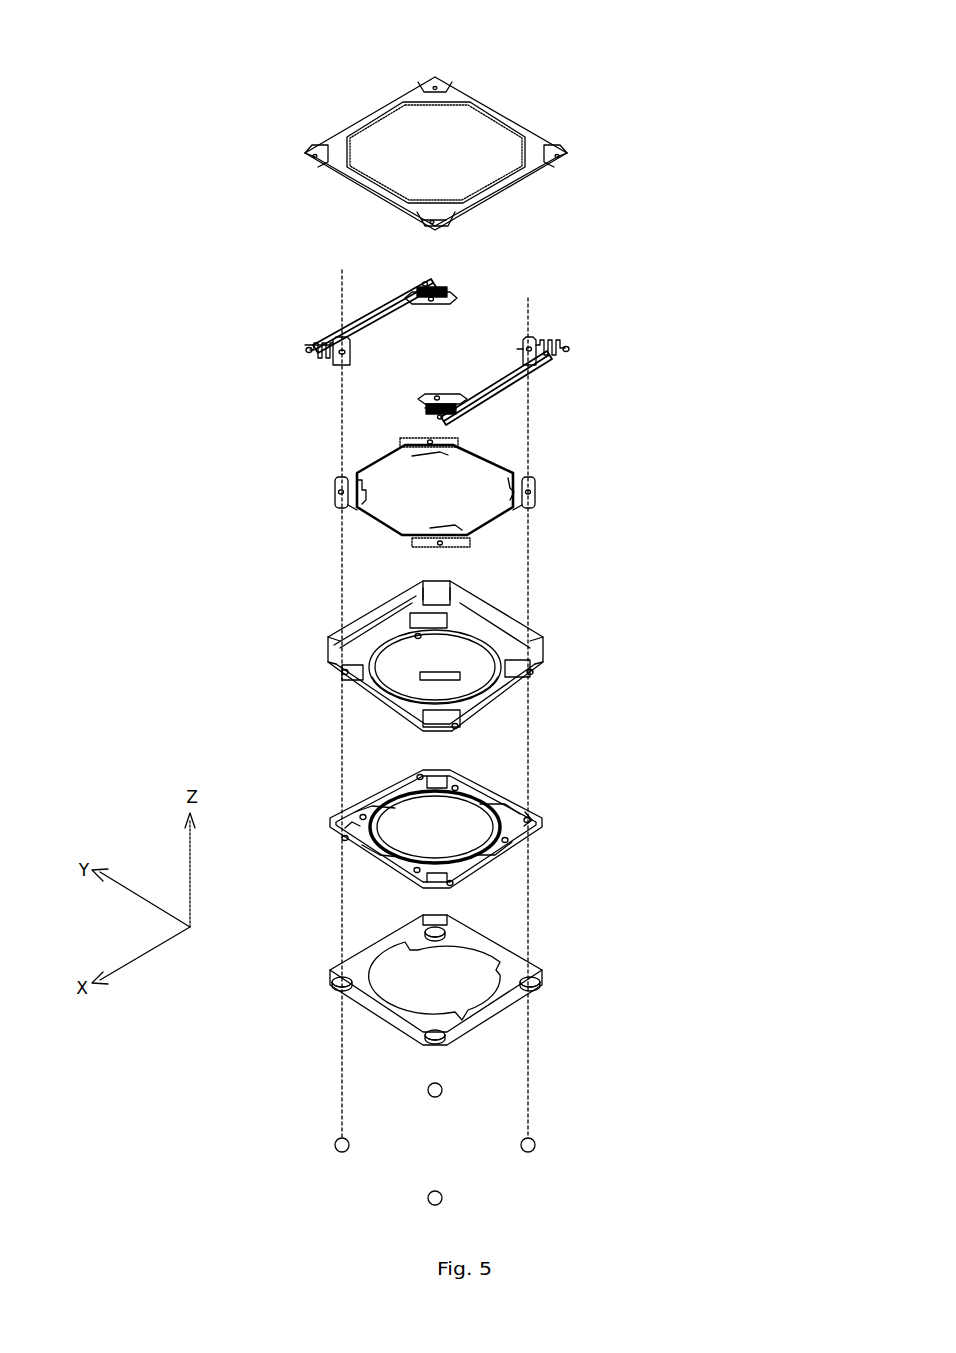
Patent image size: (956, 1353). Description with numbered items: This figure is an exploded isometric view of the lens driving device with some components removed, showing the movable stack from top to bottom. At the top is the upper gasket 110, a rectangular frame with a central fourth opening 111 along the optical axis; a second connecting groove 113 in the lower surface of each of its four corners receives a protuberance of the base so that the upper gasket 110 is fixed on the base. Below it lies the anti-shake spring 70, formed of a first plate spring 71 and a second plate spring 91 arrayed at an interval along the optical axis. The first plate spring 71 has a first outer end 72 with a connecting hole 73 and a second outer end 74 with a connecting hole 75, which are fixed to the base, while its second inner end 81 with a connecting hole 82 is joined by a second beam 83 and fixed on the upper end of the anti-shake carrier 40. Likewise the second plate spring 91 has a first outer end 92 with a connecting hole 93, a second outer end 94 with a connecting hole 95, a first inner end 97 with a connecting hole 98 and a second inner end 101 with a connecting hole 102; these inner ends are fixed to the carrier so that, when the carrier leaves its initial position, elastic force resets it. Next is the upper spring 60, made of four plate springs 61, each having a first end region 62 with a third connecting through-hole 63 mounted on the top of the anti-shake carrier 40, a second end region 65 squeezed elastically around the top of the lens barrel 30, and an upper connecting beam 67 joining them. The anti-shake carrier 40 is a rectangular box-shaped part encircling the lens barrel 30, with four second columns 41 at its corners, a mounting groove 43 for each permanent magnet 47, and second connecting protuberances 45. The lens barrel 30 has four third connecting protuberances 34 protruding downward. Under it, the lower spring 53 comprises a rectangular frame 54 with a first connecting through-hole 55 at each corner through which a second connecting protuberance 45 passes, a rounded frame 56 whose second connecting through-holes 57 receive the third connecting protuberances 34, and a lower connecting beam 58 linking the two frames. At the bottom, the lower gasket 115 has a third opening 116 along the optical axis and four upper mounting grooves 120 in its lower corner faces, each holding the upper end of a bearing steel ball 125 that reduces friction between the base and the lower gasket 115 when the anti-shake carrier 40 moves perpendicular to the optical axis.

The upper gasket 110 is at (518, 106).
The fourth opening 111 is at (381, 140).
The second connecting groove 113 is at (440, 86).
The anti-shake spring 70 is at (545, 270).
The first plate spring 71 is at (370, 305).
The first outer end 72 is at (432, 290).
The connecting hole 73 is at (423, 282).
The second outer end 74 is at (320, 360).
The connecting hole 75 is at (306, 350).
The second inner end 81 is at (333, 345).
The connecting hole 82 is at (436, 295).
The second beam 83 is at (340, 345).
The second plate spring 91 is at (492, 380).
The first outer end 92 is at (553, 345).
The connecting hole 93 is at (569, 349).
The second outer end 94 is at (437, 420).
The connecting hole 95 is at (420, 406).
The first inner end 97 is at (529, 335).
The connecting hole 98 is at (523, 348).
The second inner end 101 is at (434, 397).
The connecting hole 102 is at (440, 403).
The upper spring 60 is at (600, 430).
The plate spring 61 is at (372, 455).
The first end region 62 is at (338, 478).
The third connecting through-hole 63 is at (338, 492).
The second end region 65 is at (505, 490).
The upper connecting beam 67 is at (356, 508).
The anti-shake carrier 40 is at (550, 675).
The second column 41 is at (437, 584).
The mounting groove 43 is at (362, 615).
The second connecting protuberance 45 is at (410, 612).
The permanent magnet 47 is at (428, 592).
The third connecting protuberance 34 is at (468, 612).
The lens barrel 30 is at (380, 690).
The lower spring 53 is at (503, 795).
The rectangular frame 54 is at (525, 815).
The first connecting through-hole 55 is at (418, 772).
The rounded frame 56 is at (385, 800).
The second connecting through-hole 57 is at (457, 782).
The lower connecting beam 58 is at (505, 810).
The lower gasket 115 is at (522, 940).
The third opening 116 is at (420, 980).
The upper mounting groove 120 is at (445, 918).
The bearing steel ball 125 is at (428, 1090).